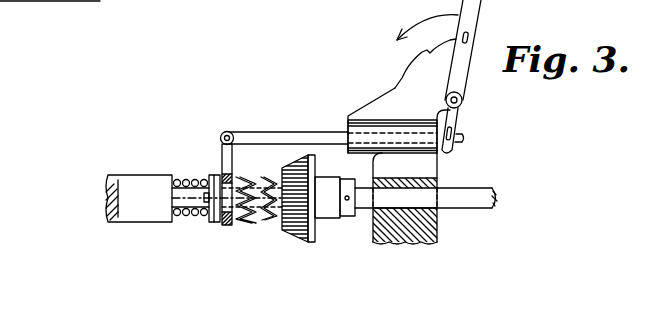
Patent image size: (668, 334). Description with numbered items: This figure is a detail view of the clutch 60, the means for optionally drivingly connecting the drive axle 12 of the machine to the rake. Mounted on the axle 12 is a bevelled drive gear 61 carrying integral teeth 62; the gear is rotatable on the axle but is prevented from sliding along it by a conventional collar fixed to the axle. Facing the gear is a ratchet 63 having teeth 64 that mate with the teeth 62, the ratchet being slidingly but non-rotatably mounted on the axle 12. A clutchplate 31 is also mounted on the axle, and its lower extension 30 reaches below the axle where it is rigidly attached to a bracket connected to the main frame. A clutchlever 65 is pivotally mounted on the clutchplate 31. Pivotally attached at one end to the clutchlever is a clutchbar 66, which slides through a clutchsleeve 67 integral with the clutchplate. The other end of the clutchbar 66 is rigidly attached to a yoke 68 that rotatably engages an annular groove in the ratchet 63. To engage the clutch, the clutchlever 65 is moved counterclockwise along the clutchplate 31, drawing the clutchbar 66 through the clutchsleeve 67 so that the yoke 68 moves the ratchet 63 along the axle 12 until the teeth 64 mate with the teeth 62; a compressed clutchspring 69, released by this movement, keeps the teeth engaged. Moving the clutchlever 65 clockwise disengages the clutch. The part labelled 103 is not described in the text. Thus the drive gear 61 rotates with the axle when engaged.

The axle 12 is at (463, 187).
The lower extension of clutchplate 30 is at (437, 223).
The clutchplate 31 is at (406, 74).
The clutch 60 is at (183, 218).
The bevelled drive gear 61 is at (302, 236).
The teeth 62 is at (276, 214).
The ratchet 63 is at (214, 224).
The teeth 64 is at (246, 224).
The clutchlever 65 is at (478, 19).
The clutchbar 66 is at (265, 132).
The clutchsleeve 67 is at (386, 128).
The yoke 68 is at (233, 158).
The clutchspring 69 is at (185, 178).
The handle 103 is at (97, 0).